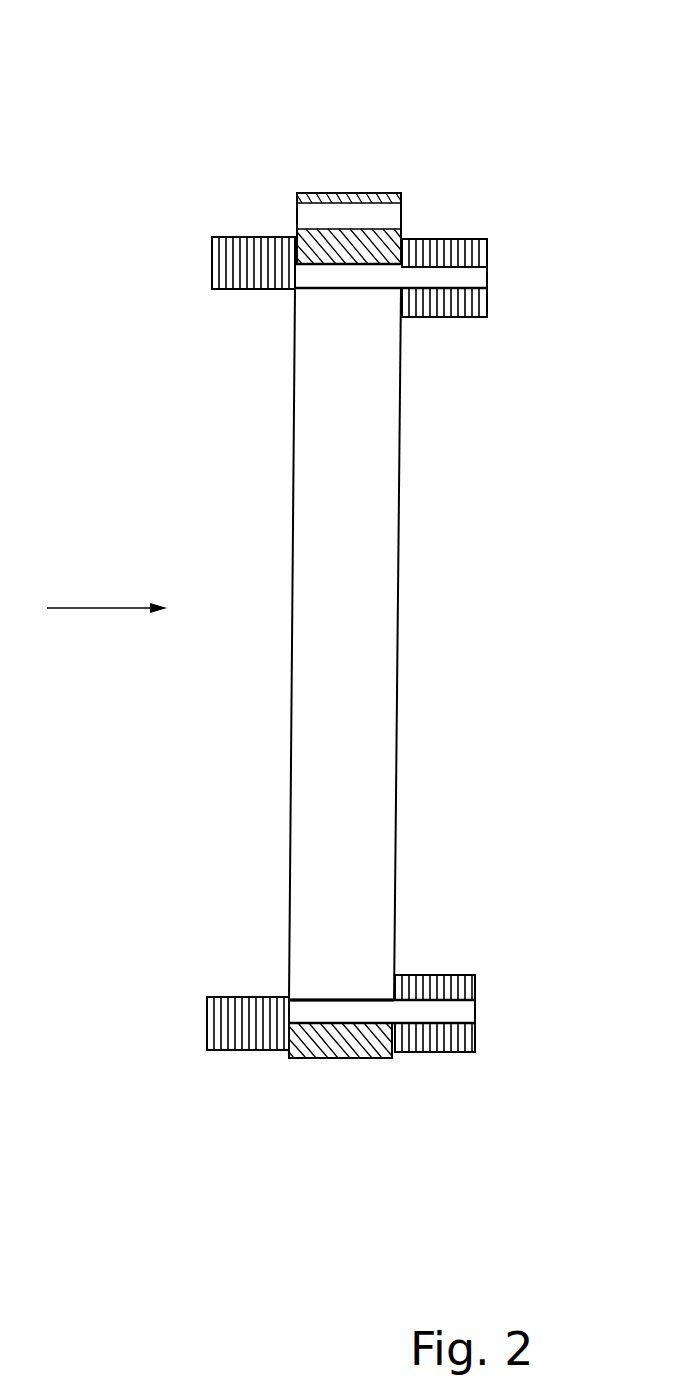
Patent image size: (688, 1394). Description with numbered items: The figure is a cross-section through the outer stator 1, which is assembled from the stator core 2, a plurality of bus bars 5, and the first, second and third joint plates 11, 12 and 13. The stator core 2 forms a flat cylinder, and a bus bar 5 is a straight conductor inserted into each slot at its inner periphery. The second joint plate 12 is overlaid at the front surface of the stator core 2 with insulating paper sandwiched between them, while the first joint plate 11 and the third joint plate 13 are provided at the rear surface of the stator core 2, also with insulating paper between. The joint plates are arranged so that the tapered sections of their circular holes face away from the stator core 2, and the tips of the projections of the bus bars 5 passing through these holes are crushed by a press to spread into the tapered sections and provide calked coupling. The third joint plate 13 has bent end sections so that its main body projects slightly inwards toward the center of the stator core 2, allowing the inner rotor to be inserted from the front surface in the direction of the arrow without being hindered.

The outer stator 1 is at (346, 127).
The stator core 2 is at (397, 628).
The bus bar 5 is at (352, 270).
The first joint plate 11 is at (458, 238).
The second joint plate 12 is at (227, 237).
The third joint plate 13 is at (447, 1052).